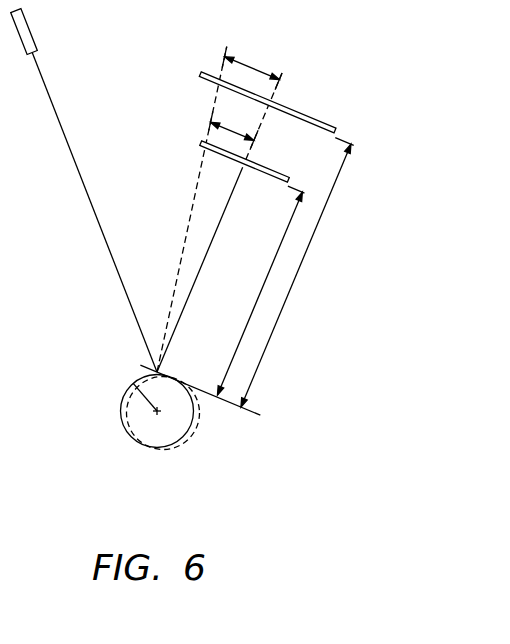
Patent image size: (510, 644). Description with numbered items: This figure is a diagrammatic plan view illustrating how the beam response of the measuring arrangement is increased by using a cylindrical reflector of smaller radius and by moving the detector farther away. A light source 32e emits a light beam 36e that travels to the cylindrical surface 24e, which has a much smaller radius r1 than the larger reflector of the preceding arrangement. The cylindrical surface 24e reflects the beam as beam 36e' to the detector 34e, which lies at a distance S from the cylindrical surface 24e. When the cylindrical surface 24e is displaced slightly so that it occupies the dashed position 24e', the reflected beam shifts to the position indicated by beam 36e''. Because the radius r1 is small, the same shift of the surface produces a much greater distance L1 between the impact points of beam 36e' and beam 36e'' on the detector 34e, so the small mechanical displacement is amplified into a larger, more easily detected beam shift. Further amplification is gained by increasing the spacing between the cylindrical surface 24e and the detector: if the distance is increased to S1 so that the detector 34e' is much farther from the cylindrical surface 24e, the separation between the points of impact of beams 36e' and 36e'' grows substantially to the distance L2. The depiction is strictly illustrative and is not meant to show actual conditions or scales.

The cylindrical surface 24e is at (133, 411).
The shifted position of cylindrical surface 24e' is at (189, 413).
The light source 32e is at (32, 36).
The detector 34e is at (258, 161).
The detector at increased distance 34e' is at (267, 102).
The light beam 36e is at (94, 213).
The reflected beam 36e' is at (219, 222).
The shifted reflected beam 36e'' is at (192, 209).
The radius of cylindrical surface r1 is at (126, 421).
The distance between cylindrical surface and detector S is at (254, 291).
The increased distance between cylindrical surface and detector S1 is at (289, 273).
The beam shift distance at detector L1 is at (232, 124).
The beam shift distance at farther detector L2 is at (251, 61).